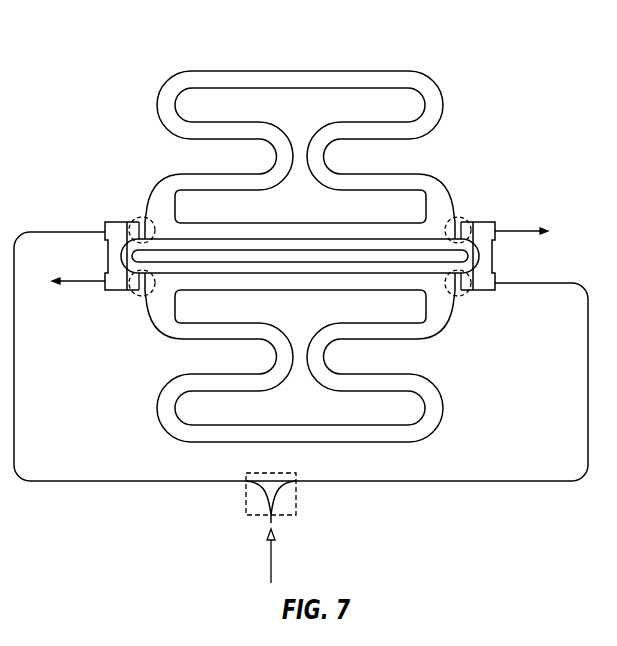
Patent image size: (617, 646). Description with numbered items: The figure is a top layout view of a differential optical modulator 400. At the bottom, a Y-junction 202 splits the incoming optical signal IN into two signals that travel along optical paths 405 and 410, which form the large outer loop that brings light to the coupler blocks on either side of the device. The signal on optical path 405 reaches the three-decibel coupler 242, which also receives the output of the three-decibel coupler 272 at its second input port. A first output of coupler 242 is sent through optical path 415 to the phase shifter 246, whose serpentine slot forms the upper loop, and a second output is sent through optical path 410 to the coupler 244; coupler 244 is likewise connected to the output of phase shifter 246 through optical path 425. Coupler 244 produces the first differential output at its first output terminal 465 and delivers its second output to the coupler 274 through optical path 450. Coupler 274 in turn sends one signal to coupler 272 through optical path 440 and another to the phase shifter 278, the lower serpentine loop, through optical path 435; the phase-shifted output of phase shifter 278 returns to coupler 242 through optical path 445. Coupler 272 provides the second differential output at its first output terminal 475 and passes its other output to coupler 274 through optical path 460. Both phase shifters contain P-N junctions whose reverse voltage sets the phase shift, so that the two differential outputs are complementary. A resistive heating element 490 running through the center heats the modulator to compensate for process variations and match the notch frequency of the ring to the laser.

The differential optical modulator 400 is at (446, 41).
The phase shifter 246 is at (292, 71).
The optical path 415 is at (176, 176).
The optical path 425 is at (424, 176).
The 3 dB coupler 242 is at (146, 216).
The coupler 244 is at (454, 216).
The 3 dB coupler 272 is at (142, 297).
The coupler 274 is at (458, 297).
The resistive heating element 490 is at (207, 250).
The optical path 410 is at (300, 223).
The optical path 440 is at (300, 290).
The optical path 445 is at (176, 341).
The optical path 435 is at (424, 341).
The phase shifter 278 is at (300, 442).
The optical path 460 is at (110, 260).
The first output terminal 475 is at (112, 291).
The first output terminal 465 is at (490, 222).
The optical path 450 is at (490, 256).
The optical path 405 is at (153, 482).
The Y-junction 202 is at (278, 517).